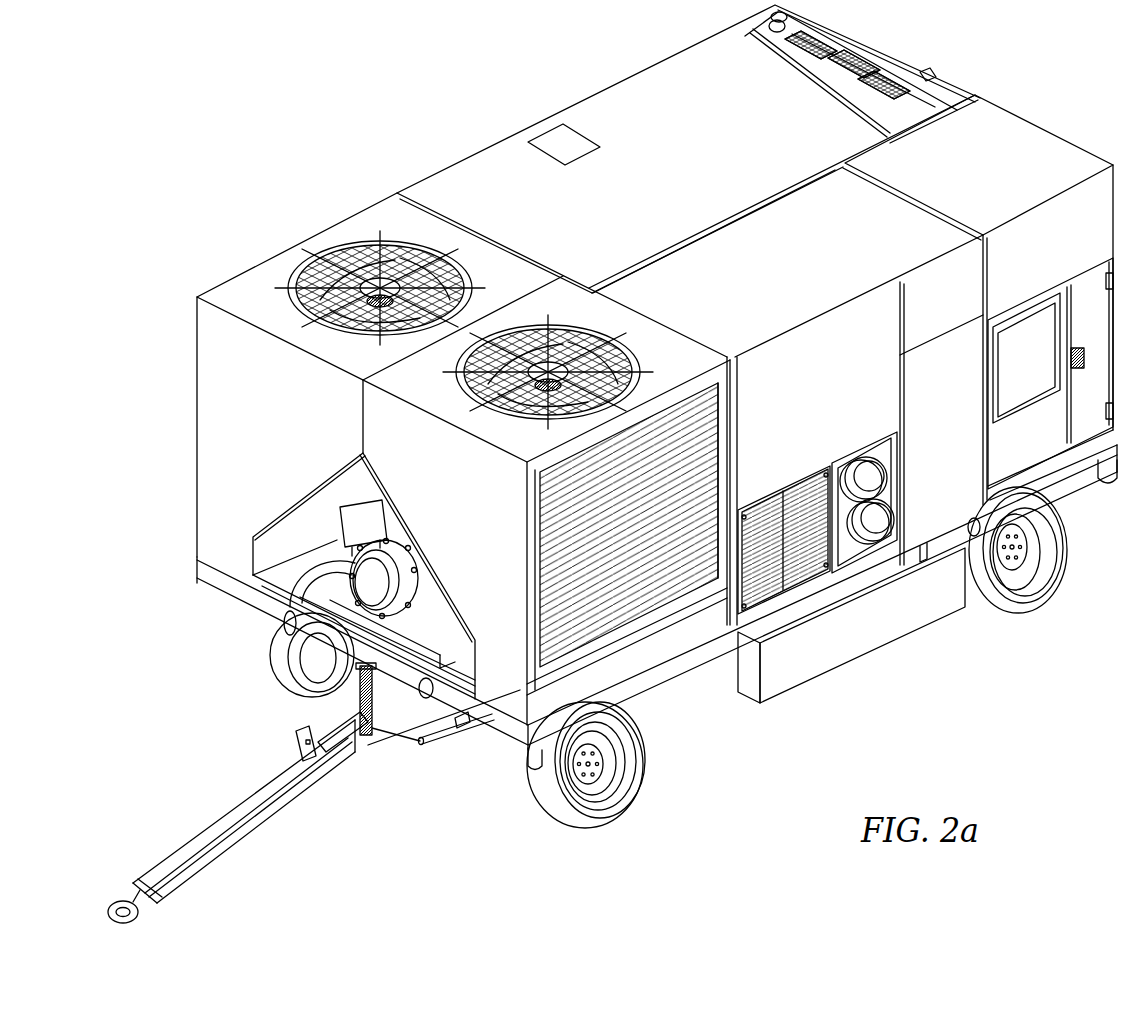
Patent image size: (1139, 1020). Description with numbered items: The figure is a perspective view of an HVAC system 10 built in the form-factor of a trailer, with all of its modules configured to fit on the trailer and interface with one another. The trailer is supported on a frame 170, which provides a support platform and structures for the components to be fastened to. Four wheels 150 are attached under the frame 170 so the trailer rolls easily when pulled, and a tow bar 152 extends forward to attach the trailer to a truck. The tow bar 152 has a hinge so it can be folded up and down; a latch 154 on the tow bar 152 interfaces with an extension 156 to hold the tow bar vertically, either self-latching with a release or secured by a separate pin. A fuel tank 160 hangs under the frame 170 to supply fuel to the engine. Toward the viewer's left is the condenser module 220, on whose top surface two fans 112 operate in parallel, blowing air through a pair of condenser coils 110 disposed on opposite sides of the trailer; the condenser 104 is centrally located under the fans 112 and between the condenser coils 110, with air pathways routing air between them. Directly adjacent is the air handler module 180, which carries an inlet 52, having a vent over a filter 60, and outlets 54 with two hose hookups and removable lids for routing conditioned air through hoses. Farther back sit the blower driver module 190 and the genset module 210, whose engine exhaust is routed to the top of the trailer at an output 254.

The HVAC system 10 is at (228, 97).
The inlet 52 is at (795, 563).
The outlet 54 is at (872, 476).
The filter 60 is at (792, 565).
The condenser 104 is at (402, 578).
The condenser coil 110 is at (695, 446).
The fan 112 is at (435, 277).
The wheel 150 is at (1058, 542).
The tow bar 152 is at (200, 838).
The latch 154 is at (372, 737).
The extension 156 is at (296, 744).
The fuel tank 160 is at (922, 617).
The frame 170 is at (650, 677).
The air handler module 180 is at (767, 240).
The blower driver module 190 is at (1048, 140).
The genset module 210 is at (595, 110).
The condenser module 220 is at (228, 380).
The output 254 is at (782, 22).